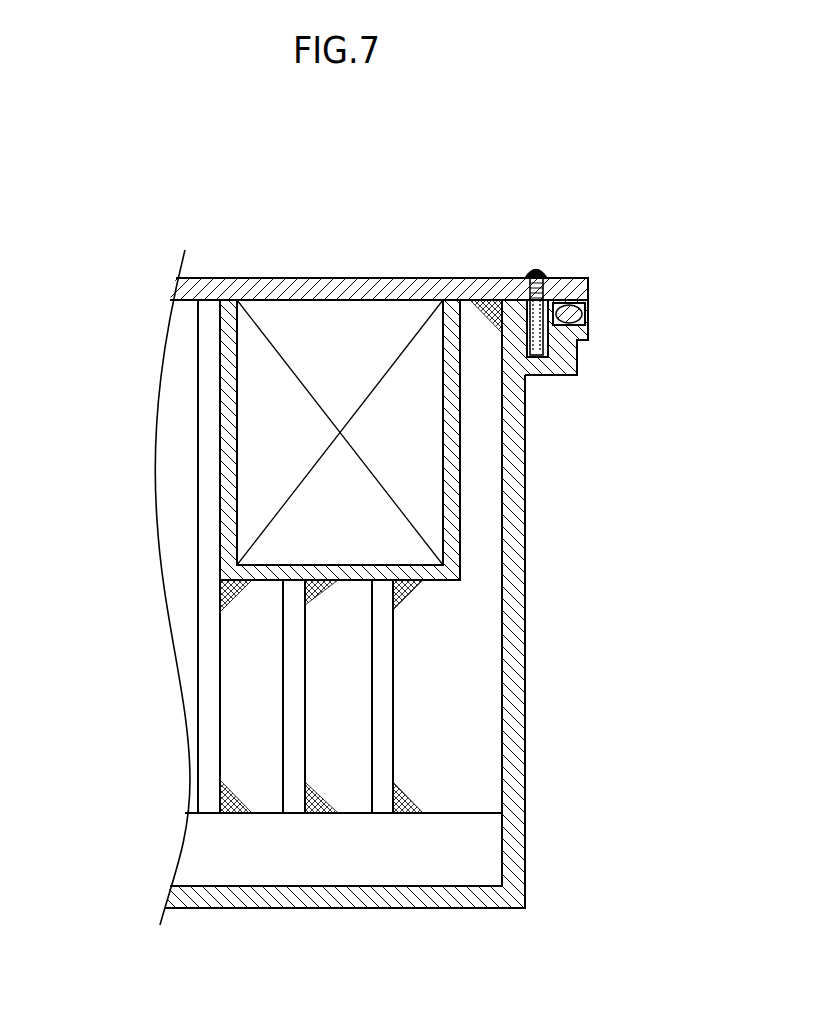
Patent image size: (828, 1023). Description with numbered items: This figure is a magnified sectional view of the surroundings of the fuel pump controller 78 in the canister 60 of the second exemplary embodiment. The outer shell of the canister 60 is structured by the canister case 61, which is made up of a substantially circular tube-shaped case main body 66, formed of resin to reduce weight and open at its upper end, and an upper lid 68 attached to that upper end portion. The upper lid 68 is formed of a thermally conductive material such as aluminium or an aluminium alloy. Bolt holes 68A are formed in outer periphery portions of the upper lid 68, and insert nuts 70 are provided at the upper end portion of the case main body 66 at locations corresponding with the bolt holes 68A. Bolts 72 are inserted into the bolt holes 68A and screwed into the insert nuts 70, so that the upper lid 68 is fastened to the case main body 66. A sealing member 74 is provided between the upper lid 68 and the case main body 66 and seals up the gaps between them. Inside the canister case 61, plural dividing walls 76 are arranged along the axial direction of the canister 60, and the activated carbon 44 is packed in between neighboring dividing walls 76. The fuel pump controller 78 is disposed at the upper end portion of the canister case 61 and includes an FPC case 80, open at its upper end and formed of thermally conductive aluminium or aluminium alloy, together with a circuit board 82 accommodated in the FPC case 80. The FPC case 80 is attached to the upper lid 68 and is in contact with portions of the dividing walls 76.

The canister 60 is at (642, 238).
The canister case 61 is at (584, 522).
The case main body 66 is at (527, 615).
The upper lid 68 is at (280, 272).
The bolt hole 68A is at (563, 277).
The insert nut 70 is at (578, 355).
The bolt 72 is at (535, 270).
The sealing member 74 is at (588, 303).
The dividing wall 76 is at (283, 722).
The fuel pump controller 78 is at (378, 278).
The FPC case 80 is at (220, 430).
The circuit board 82 is at (255, 488).
The activated carbon 44 is at (410, 603).